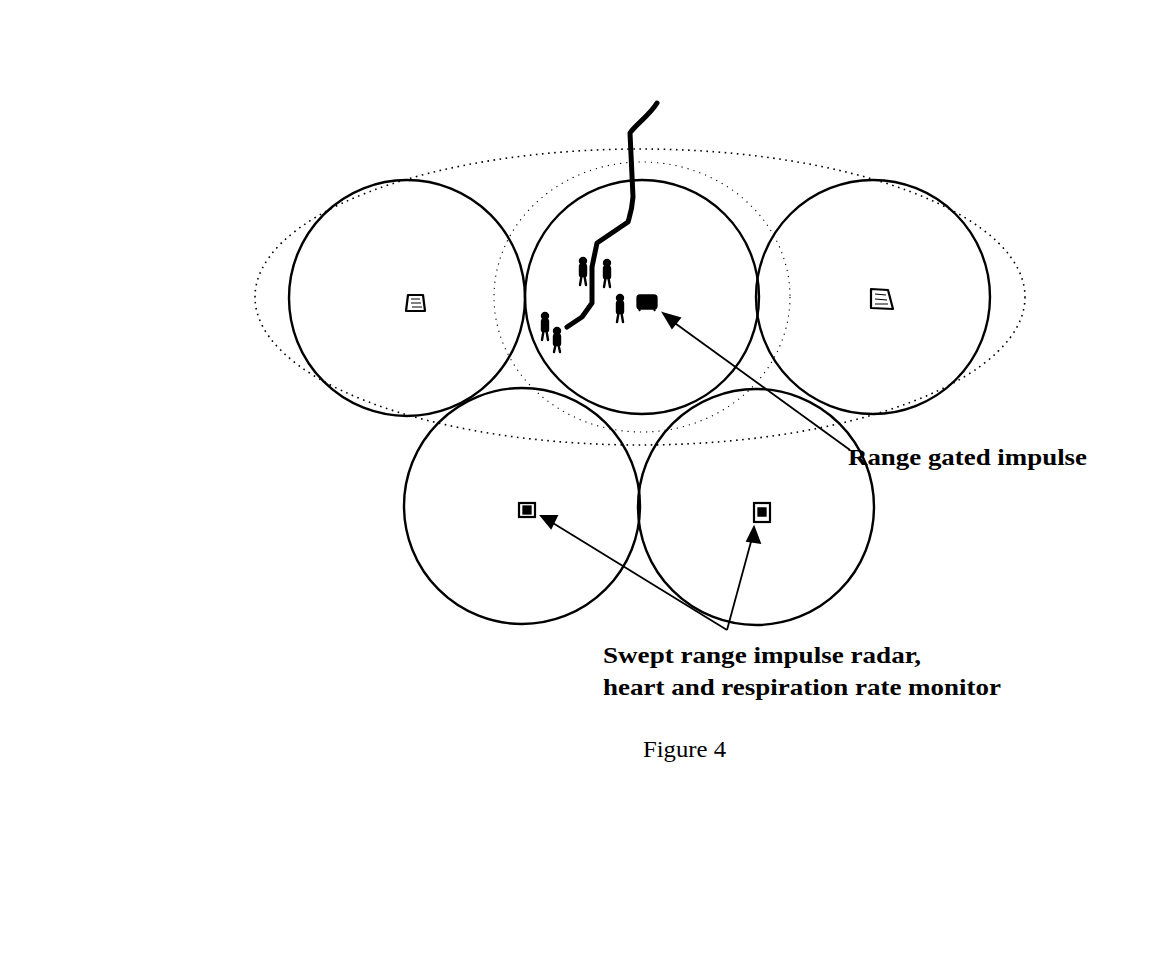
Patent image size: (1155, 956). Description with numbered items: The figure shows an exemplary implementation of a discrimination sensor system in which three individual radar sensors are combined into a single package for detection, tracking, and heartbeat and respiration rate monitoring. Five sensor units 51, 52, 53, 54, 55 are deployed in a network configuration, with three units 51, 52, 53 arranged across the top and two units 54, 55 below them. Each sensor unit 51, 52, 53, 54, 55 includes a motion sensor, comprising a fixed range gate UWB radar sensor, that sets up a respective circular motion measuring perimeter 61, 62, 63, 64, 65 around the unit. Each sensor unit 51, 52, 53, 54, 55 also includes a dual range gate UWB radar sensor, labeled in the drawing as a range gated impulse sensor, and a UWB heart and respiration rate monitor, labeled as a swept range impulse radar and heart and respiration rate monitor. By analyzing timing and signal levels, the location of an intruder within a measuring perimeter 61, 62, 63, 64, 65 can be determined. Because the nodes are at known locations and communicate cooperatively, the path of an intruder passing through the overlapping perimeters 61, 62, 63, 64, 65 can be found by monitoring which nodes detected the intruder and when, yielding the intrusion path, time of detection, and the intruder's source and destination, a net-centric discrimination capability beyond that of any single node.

The sensor unit 51 is at (415, 292).
The sensor unit 52 is at (648, 293).
The sensor unit 53 is at (882, 290).
The sensor unit 54 is at (520, 508).
The sensor unit 55 is at (773, 512).
The motion measuring perimeter 61 is at (465, 195).
The motion measuring perimeter 62 is at (725, 210).
The motion measuring perimeter 63 is at (972, 228).
The motion measuring perimeter 64 is at (457, 606).
The motion measuring perimeter 65 is at (858, 572).